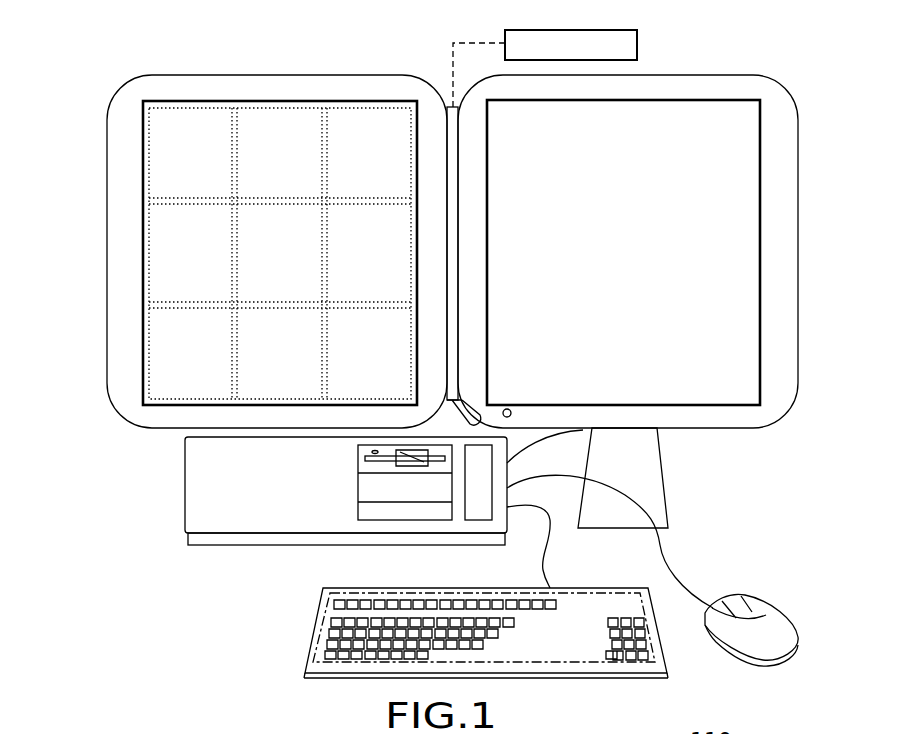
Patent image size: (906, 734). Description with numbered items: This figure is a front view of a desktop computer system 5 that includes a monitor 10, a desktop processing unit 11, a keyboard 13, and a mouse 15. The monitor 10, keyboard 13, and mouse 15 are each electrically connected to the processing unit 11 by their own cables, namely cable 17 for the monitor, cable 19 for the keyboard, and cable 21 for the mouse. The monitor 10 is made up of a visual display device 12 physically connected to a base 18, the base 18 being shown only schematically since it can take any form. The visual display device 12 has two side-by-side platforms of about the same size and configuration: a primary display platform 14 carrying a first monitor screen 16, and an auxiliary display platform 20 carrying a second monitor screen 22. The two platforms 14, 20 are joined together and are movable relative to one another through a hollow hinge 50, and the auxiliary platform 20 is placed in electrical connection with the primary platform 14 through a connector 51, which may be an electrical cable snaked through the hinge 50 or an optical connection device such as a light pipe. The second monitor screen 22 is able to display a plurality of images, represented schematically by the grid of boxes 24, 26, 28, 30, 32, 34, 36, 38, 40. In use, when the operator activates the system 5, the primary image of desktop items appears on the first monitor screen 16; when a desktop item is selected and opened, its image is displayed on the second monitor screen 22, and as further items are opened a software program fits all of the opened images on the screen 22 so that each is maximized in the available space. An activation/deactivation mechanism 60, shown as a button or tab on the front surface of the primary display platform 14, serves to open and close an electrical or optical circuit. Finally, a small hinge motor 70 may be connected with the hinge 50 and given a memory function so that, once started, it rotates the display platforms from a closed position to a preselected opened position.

The desktop computer system 5 is at (66, 14).
The monitor 10 is at (797, 92).
The desktop processing unit 11 is at (193, 497).
The visual display device 12 is at (111, 254).
The keyboard 13 is at (323, 605).
The primary display platform 14 is at (780, 245).
The mouse 15 is at (770, 617).
The first monitor screen 16 is at (730, 290).
The cable 17 is at (533, 442).
The base 18 is at (640, 452).
The cable 19 is at (550, 543).
The auxiliary display platform 20 is at (245, 93).
The cable 21 is at (670, 553).
The second monitor screen 22 is at (305, 100).
The box 24 is at (203, 167).
The box 26 is at (295, 167).
The box 28 is at (385, 167).
The box 30 is at (203, 266).
The box 32 is at (295, 266).
The box 34 is at (385, 266).
The box 36 is at (203, 366).
The box 38 is at (295, 366).
The box 40 is at (385, 366).
The hollow hinge 50 is at (448, 107).
The connector 51 is at (477, 392).
The activation/deactivation mechanism 60 is at (511, 413).
The hinge motor 70 is at (637, 42).